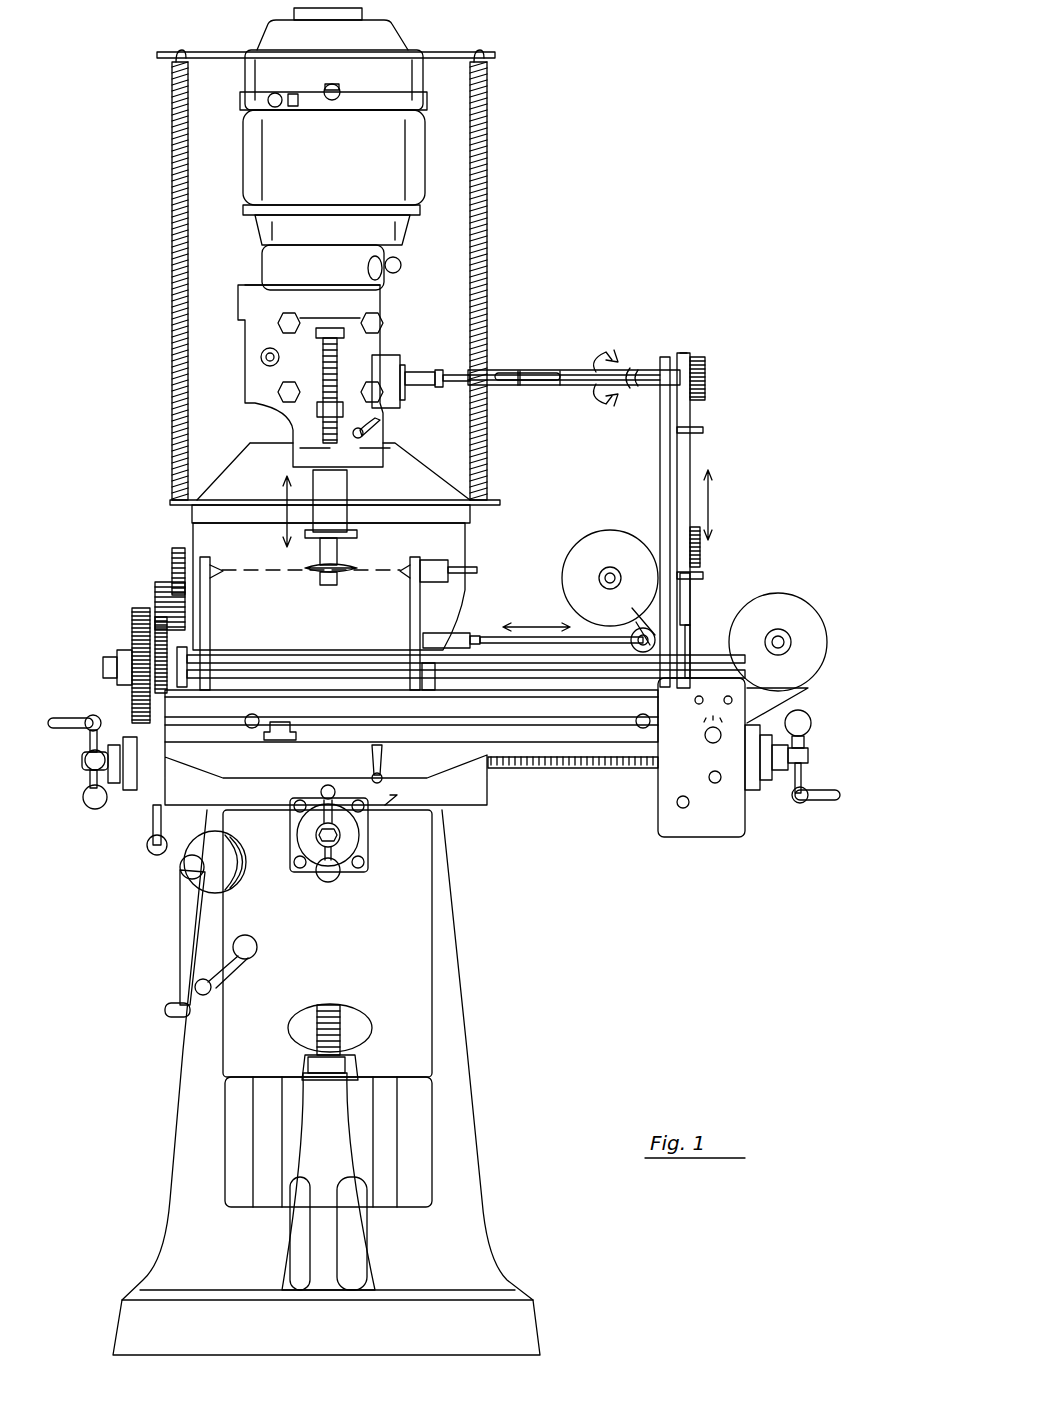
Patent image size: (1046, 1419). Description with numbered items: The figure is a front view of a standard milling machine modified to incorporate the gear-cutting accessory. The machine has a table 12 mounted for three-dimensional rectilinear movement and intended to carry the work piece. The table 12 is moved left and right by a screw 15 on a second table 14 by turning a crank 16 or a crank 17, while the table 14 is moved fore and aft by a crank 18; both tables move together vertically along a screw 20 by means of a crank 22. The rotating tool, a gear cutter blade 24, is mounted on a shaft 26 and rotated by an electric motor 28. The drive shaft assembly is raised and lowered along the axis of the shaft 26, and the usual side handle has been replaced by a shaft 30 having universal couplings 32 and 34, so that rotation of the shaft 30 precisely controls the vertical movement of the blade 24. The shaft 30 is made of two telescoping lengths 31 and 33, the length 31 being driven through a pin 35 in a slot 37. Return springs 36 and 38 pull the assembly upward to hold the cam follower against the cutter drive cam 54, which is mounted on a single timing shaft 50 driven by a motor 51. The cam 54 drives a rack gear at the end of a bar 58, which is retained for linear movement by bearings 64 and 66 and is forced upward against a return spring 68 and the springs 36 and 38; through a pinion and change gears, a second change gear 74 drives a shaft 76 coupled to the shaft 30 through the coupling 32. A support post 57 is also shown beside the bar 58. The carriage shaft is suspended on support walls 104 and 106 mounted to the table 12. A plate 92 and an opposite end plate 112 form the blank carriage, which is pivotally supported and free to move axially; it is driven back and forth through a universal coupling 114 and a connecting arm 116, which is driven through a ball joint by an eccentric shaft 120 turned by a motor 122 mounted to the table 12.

The table 12 is at (540, 745).
The table 14 is at (483, 795).
The screw 15 is at (605, 768).
The crank 16 is at (80, 763).
The crank 17 is at (808, 756).
The crank 18 is at (360, 842).
The screw 20 is at (345, 1030).
The crank 22 is at (180, 905).
The gear cutter blade 24 is at (340, 578).
The shaft 26 is at (345, 552).
The electric motor 28 is at (418, 196).
The shaft 30 is at (538, 368).
The telescoping length 31 is at (455, 387).
The universal coupling 32 is at (632, 360).
The telescoping length 33 is at (568, 386).
The universal coupling 34 is at (435, 372).
The pin 35 is at (505, 385).
The return spring 36 is at (490, 170).
The slot 37 is at (540, 386).
The return spring 38 is at (172, 195).
The timing shaft 50 is at (720, 655).
The motor 51 is at (790, 598).
The cutter drive cam 54 is at (690, 645).
The post 57 is at (660, 422).
The bar 58 is at (690, 460).
The bearing 64 is at (703, 428).
The bearing 66 is at (703, 575).
The return spring 68 is at (700, 550).
The second change gear 74 is at (705, 372).
The shaft 76 is at (645, 360).
The plate 92 is at (208, 590).
The support wall 104 is at (187, 655).
The support wall 106 is at (425, 645).
The end plate 112 is at (410, 598).
The universal coupling 114 is at (450, 620).
The connecting arm 116 is at (490, 628).
The eccentric shaft 120 is at (635, 618).
The motor 122 is at (615, 530).